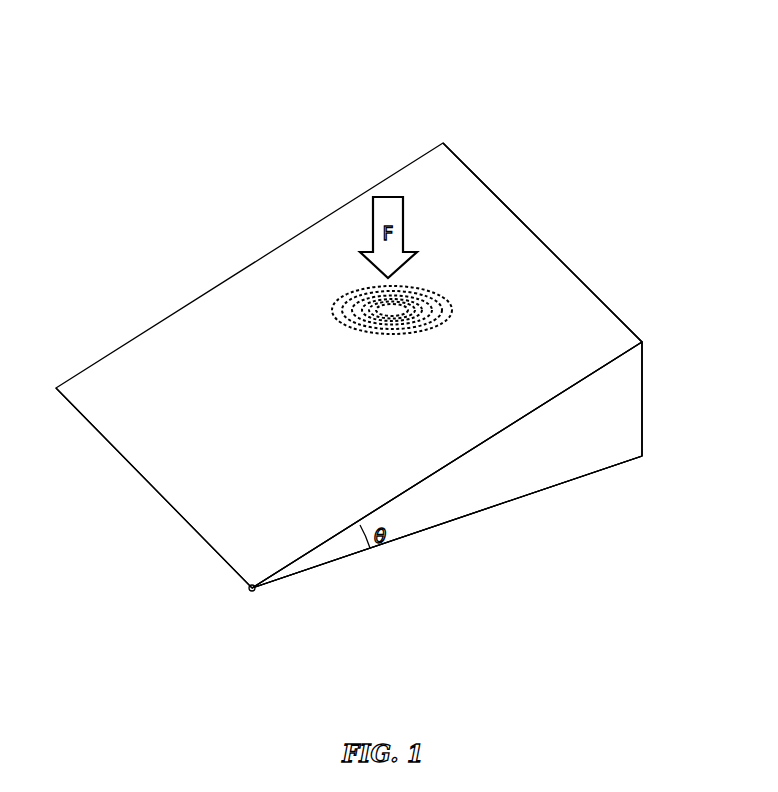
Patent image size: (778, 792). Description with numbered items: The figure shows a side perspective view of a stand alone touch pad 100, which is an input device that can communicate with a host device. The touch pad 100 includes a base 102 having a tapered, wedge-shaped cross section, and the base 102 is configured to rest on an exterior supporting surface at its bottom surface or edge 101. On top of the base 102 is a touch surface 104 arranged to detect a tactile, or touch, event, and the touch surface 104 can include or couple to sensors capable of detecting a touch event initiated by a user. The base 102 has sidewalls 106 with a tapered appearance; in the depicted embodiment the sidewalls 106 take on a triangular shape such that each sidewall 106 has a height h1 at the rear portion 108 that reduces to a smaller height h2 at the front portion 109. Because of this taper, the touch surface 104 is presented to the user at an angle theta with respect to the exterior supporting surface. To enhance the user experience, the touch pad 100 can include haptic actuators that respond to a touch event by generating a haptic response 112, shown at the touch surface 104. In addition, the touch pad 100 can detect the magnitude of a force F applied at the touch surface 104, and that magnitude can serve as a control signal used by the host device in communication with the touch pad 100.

The stand alone touch pad 100 is at (366, 92).
The bottom surface or edge 101 is at (548, 490).
The base 102 is at (470, 495).
The touch surface 104 is at (537, 265).
The sidewall 106 is at (447, 465).
The rear portion 108 is at (590, 270).
The front portion 109 is at (150, 508).
The haptic response 112 is at (448, 303).
The height at rear portion h1 is at (658, 352).
The height at front portion h2 is at (243, 599).